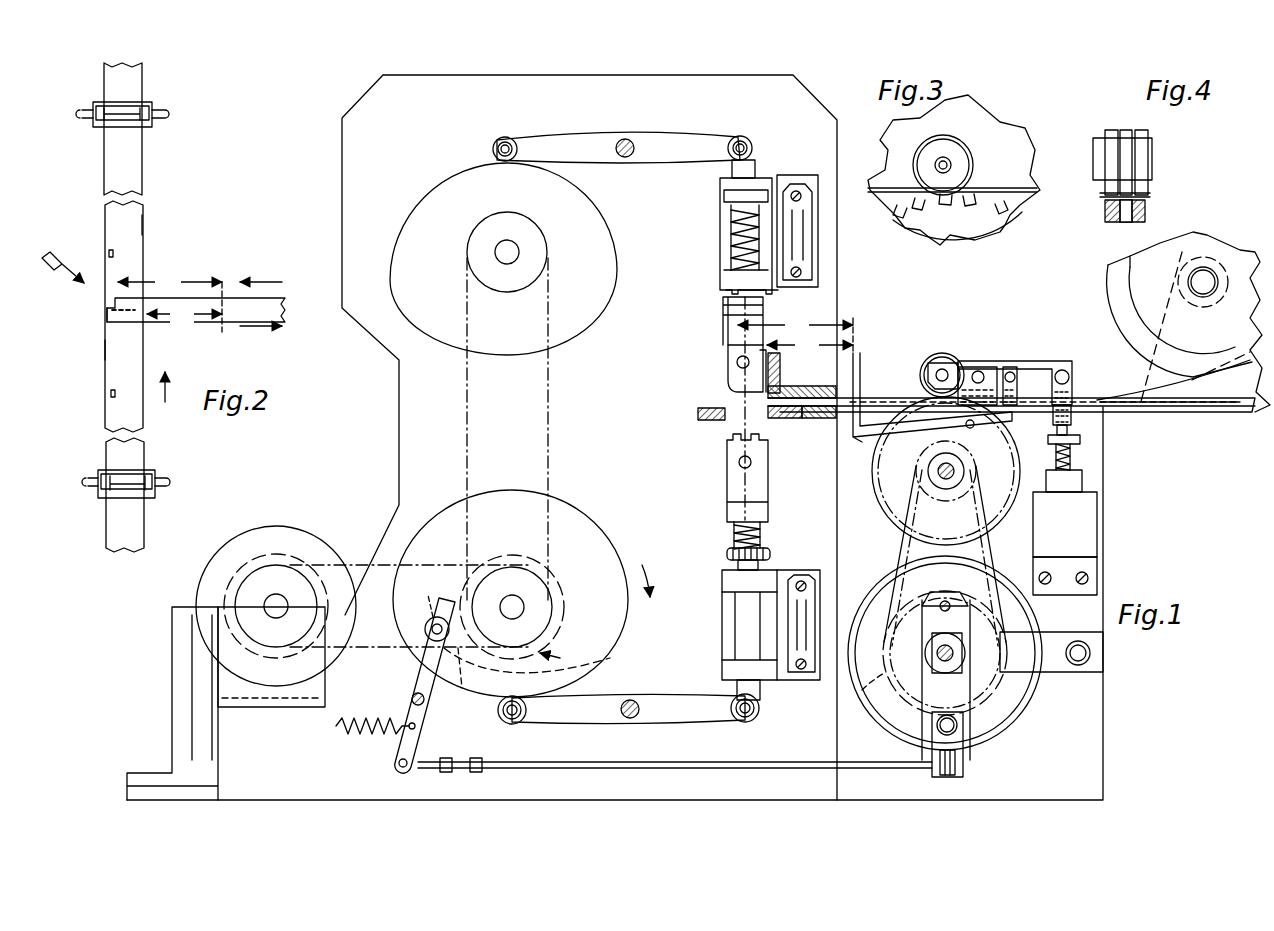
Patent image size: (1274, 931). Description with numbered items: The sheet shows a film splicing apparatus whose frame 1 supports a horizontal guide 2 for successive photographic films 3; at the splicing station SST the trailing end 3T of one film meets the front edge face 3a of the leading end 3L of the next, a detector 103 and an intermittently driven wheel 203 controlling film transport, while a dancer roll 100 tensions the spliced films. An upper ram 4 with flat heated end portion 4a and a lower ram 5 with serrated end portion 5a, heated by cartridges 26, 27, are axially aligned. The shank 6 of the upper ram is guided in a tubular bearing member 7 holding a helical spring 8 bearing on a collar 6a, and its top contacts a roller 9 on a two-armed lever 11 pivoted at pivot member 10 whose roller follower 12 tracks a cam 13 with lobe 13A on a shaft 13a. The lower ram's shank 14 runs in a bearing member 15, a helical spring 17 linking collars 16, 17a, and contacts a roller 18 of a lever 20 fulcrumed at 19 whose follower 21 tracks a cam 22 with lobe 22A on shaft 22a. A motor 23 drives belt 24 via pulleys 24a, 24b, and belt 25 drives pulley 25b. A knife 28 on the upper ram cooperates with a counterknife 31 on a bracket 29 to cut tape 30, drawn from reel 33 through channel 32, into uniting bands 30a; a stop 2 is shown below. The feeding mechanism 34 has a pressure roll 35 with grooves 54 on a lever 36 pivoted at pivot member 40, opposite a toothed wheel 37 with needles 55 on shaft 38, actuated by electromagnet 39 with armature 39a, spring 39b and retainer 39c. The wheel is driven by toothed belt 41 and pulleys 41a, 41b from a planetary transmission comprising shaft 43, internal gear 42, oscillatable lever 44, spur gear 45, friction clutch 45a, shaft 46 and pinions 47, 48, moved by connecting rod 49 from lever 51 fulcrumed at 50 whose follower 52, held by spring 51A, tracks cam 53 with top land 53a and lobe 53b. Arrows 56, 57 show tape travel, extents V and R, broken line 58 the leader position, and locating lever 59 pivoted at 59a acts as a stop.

In FIG. 1, the frame 1 is at (360, 114).
In FIG. 1, the guide 2 is at (706, 421).
In FIG. 2, the photographic film 3 is at (105, 236).
In FIG. 1, the photographic film 3 is at (764, 442).
In FIG. 2, the front edge face 3a is at (110, 304).
In FIG. 2, the trailing end 3T is at (140, 226).
In FIG. 2, the leading end 3L is at (106, 352).
In FIG. 1, the upper ram 4 is at (728, 342).
In FIG. 1, the lower end portion of upper ram 4a is at (728, 388).
In FIG. 1, the lower ram 5 is at (768, 492).
In FIG. 1, the upper end portion of lower ram 5a is at (739, 462).
In FIG. 1, the shank 6 is at (754, 170).
In FIG. 1, the collar 6a is at (766, 195).
In FIG. 1, the tubular bearing member 7 is at (720, 184).
In FIG. 1, the helical spring 8 is at (728, 240).
In FIG. 1, the roller 9 is at (745, 136).
In FIG. 1, the pivot member 10 is at (620, 140).
In FIG. 1, the two-armed lever 11 is at (676, 140).
In FIG. 1, the roller follower 12 is at (498, 140).
In FIG. 1, the rotary cam 13 is at (615, 218).
In FIG. 1, the shaft 13a is at (502, 246).
In FIG. 1, the lobe 13A is at (592, 322).
In FIG. 1, the shank 14 is at (760, 688).
In FIG. 1, the tubular bearing member 15 is at (779, 576).
In FIG. 1, the collar 16 is at (726, 554).
In FIG. 1, the helical spring 17 is at (766, 534).
In FIG. 1, the collar 17a is at (722, 540).
In FIG. 1, the roller 18 is at (748, 724).
In FIG. 1, the fulcrum 19 is at (630, 700).
In FIG. 1, the two-armed lever 20 is at (674, 702).
In FIG. 1, the roller follower 21 is at (500, 718).
In FIG. 1, the rotary cam 22 is at (445, 490).
In FIG. 1, the shaft 22a is at (514, 582).
In FIG. 1, the lobe 22A is at (598, 552).
In FIG. 1, the prime mover 23 is at (260, 530).
In FIG. 1, the endless chain or belt 24 is at (350, 564).
In FIG. 1, the sprocket wheel or pulley 24a is at (233, 580).
In FIG. 1, the sprocket wheel or pulley 24b is at (554, 632).
In FIG. 1, the endless chain or belt 25 is at (466, 404).
In FIG. 1, the sprocket wheel or pulley 25b is at (502, 294).
In FIG. 1, the heating cartridge 26 is at (737, 364).
In FIG. 1, the heating cartridge 27 is at (728, 522).
In FIG. 1, the knife 28 is at (780, 372).
In FIG. 1, the supporting bracket 29 is at (786, 392).
In FIG. 2, the tape 30 is at (282, 305).
In FIG. 1, the tape 30 is at (1124, 398).
In FIG. 3, the tape 30 is at (1004, 187).
In FIG. 4, the tape 30 is at (1150, 194).
In FIG. 2, the uniting band 30a is at (135, 318).
In FIG. 1, the counterknife 31 is at (780, 418).
In FIG. 1, the channel 32 is at (808, 418).
In FIG. 1, the reel 33 is at (1138, 276).
In FIG. 1, the feeding mechanism 34 is at (910, 354).
In FIG. 1, the pressure roll 35 is at (940, 356).
In FIG. 3, the pressure roll 35 is at (950, 136).
In FIG. 4, the pressure roll 35 is at (1150, 146).
In FIG. 1, the lever 36 is at (1030, 362).
In FIG. 1, the toothed wheel 37 is at (880, 475).
In FIG. 3, the toothed wheel 37 is at (970, 229).
In FIG. 4, the toothed wheel 37 is at (1148, 212).
In FIG. 1, the shaft 38 is at (946, 478).
In FIG. 1, the electromagnet 39 is at (1098, 517).
In FIG. 1, the armature 39a is at (1083, 438).
In FIG. 1, the helical spring 39b is at (1083, 475).
In FIG. 1, the retainer 39c is at (1080, 456).
In FIG. 1, the pivot member 40 is at (978, 366).
In FIG. 1, the toothed belt 41 is at (900, 540).
In FIG. 1, the toothed pulley 41a is at (986, 456).
In FIG. 1, the toothed pulley 41b is at (868, 692).
In FIG. 1, the internal gear 42 is at (1040, 690).
In FIG. 1, the shaft 43 is at (946, 672).
In FIG. 1, the oscillatable lever 44 is at (966, 728).
In FIG. 1, the spur gear 45 is at (900, 724).
In FIG. 1, the friction clutch 45a is at (1020, 624).
In FIG. 1, the shaft 46 is at (942, 598).
In FIG. 1, the pinion 47 is at (950, 600).
In FIG. 1, the pinion 48 is at (888, 574).
In FIG. 1, the connecting rod 49 is at (704, 762).
In FIG. 1, the fulcrum 50 is at (410, 700).
In FIG. 1, the two-armed lever 51 is at (402, 744).
In FIG. 1, the spring 51A is at (342, 728).
In FIG. 1, the roller follower 52 is at (432, 605).
In FIG. 1, the cam 53 is at (580, 660).
In FIG. 1, the top land 53a is at (460, 688).
In FIG. 1, the lobe 53b is at (500, 668).
In FIG. 4, the circumferential grooves 54 is at (1136, 130).
In FIG. 3, the needles 55 is at (1012, 208).
In FIG. 4, the needles 55 is at (1100, 197).
In FIG. 2, the arrow 56 is at (260, 282).
In FIG. 2, the arrow 57 is at (260, 326).
In FIG. 2, the broken line 58 is at (222, 284).
In FIG. 1, the broken line 58 is at (853, 340).
In FIG. 1, the locating lever 59 is at (856, 440).
In FIG. 1, the pivot 59a is at (1012, 432).
In FIG. 2, the dancer roll 100 is at (152, 102).
In FIG. 2, the detector 103 is at (57, 247).
In FIG. 2, the intermittently driven wheel 203 is at (148, 471).
In FIG. 2, the splicing station SST is at (167, 250).
In FIG. 2, the extent of forward movement V is at (170, 283).
In FIG. 1, the extent of forward movement V is at (795, 326).
In FIG. 2, the extent of rearward movement R is at (184, 315).
In FIG. 1, the extent of rearward movement R is at (810, 346).